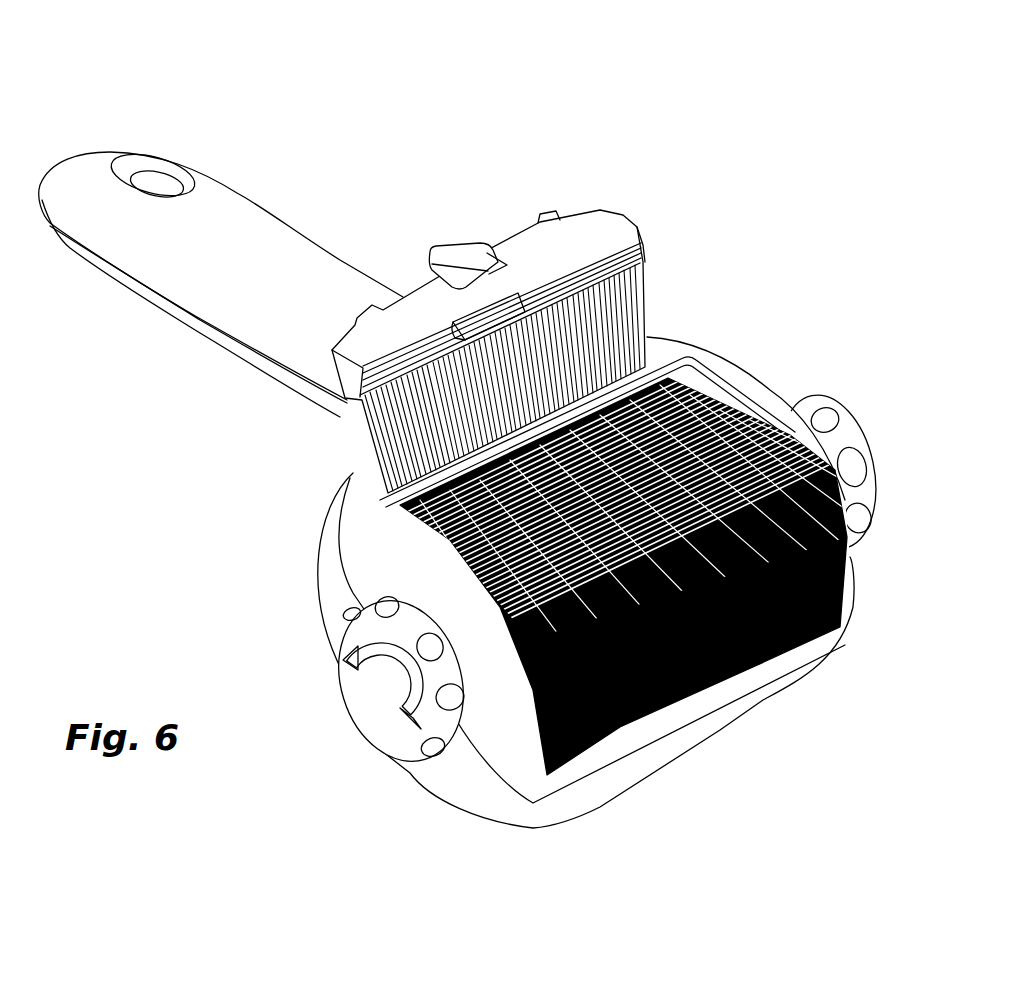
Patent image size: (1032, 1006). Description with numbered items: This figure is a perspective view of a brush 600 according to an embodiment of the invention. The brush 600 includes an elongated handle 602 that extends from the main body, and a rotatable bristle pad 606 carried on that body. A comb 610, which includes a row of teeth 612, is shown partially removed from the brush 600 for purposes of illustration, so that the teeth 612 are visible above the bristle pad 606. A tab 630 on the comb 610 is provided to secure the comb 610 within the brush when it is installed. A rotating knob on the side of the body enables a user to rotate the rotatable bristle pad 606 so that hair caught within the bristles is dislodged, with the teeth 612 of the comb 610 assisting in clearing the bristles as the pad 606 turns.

The brush 600 is at (573, 120).
The handle 602 is at (257, 228).
The rotatable bristle pad 606 is at (840, 567).
The comb 610 is at (605, 223).
The teeth 612 is at (625, 318).
The tab 630 is at (455, 248).